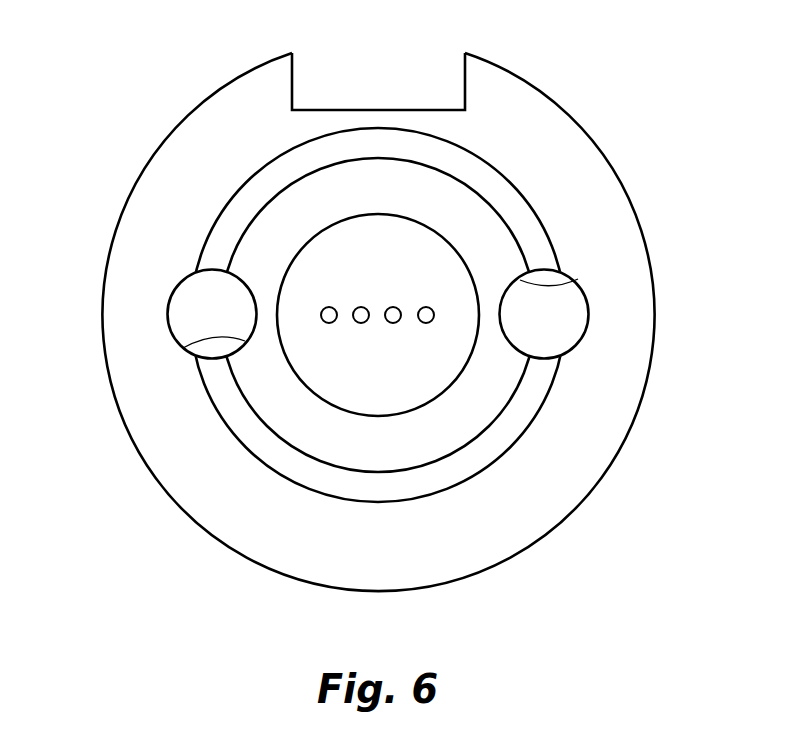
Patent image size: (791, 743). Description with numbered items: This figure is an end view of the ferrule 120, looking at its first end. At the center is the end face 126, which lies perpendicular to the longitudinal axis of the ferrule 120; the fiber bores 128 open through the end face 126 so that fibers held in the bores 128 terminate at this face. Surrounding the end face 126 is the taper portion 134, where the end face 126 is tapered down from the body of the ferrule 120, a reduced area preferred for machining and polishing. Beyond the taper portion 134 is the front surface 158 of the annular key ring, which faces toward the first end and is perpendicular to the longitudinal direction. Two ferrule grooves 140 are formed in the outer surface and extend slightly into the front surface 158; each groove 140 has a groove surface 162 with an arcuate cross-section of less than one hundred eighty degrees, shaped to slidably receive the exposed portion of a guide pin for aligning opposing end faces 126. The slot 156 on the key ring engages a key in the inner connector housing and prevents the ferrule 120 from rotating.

The ferrule 120 is at (383, 336).
The end face 126 is at (337, 388).
The fiber bores 128 is at (426, 323).
The taper portion 134 is at (493, 235).
The ferrule grooves 140 is at (240, 281).
The slot 156 is at (293, 88).
The front surface 158 is at (612, 393).
The groove surface 162 is at (183, 348).